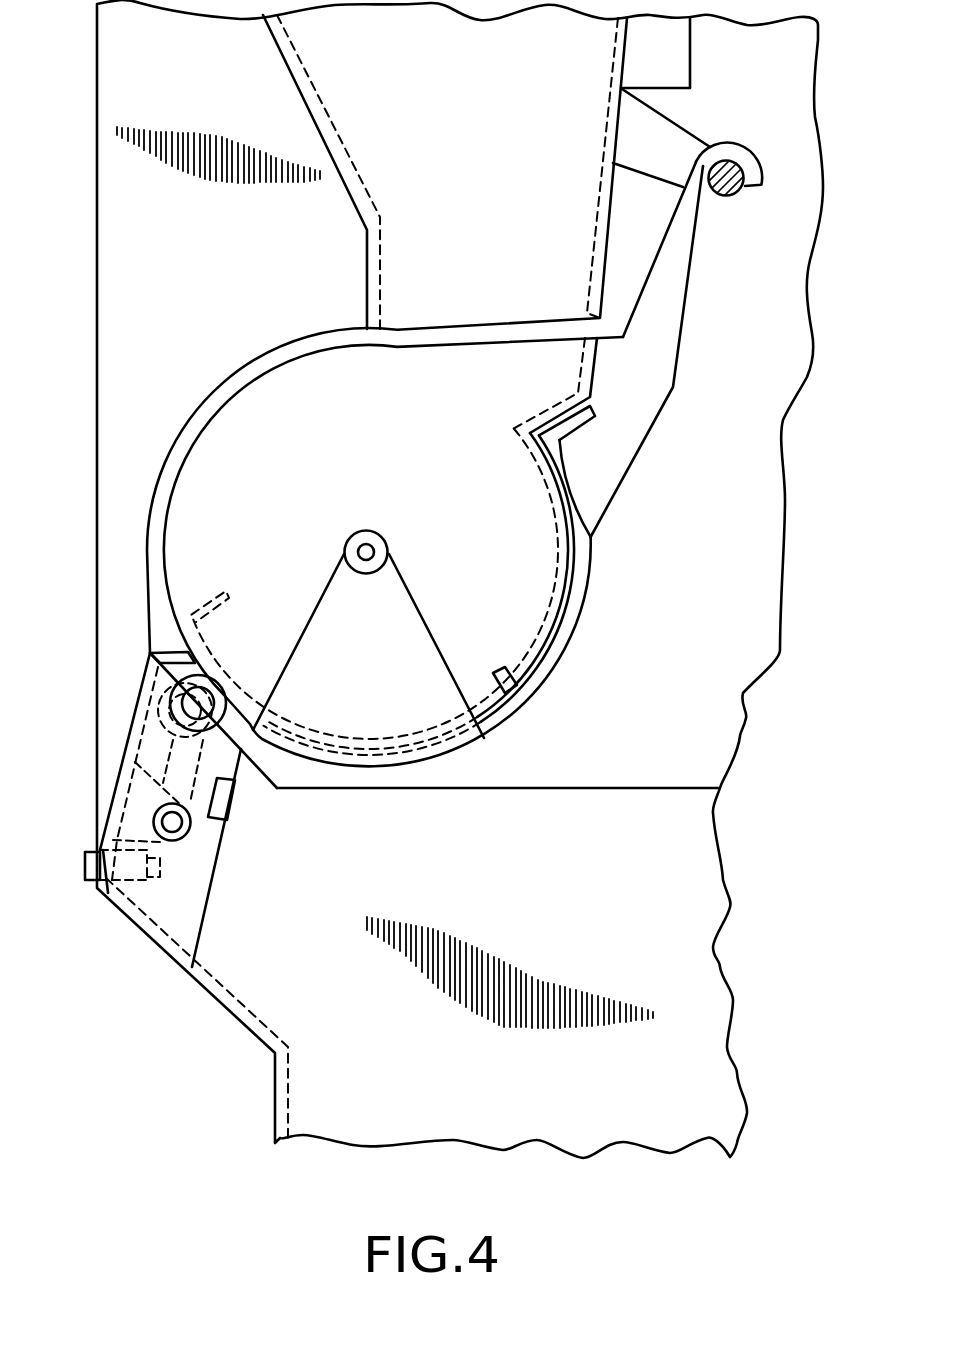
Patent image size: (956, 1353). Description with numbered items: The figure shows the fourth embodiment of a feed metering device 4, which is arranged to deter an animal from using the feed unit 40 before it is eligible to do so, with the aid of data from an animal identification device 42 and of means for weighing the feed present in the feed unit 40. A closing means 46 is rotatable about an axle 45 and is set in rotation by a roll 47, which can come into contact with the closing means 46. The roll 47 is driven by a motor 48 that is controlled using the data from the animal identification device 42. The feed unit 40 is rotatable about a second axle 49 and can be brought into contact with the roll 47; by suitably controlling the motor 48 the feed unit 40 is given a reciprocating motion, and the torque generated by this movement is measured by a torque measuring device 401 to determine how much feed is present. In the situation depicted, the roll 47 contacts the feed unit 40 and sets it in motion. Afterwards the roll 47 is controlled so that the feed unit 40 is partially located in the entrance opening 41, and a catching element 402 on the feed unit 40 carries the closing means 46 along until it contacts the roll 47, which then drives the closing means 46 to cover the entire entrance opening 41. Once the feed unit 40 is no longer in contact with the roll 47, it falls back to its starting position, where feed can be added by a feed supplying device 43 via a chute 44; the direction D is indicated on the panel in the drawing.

The feed metering device 4 is at (622, 508).
The feed unit 40 is at (553, 660).
The entrance opening 41 is at (242, 383).
The animal identification device 42 is at (165, 903).
The feed supplying device 43 is at (663, 60).
The chute 44 is at (340, 100).
The axle 45 is at (366, 552).
The closing means 46 is at (383, 683).
The roll 47 is at (216, 702).
The motor 48 is at (187, 833).
The axle 49 is at (740, 198).
The torque measuring device 401 is at (227, 802).
The catching element 402 is at (499, 668).
The direction D is at (214, 937).